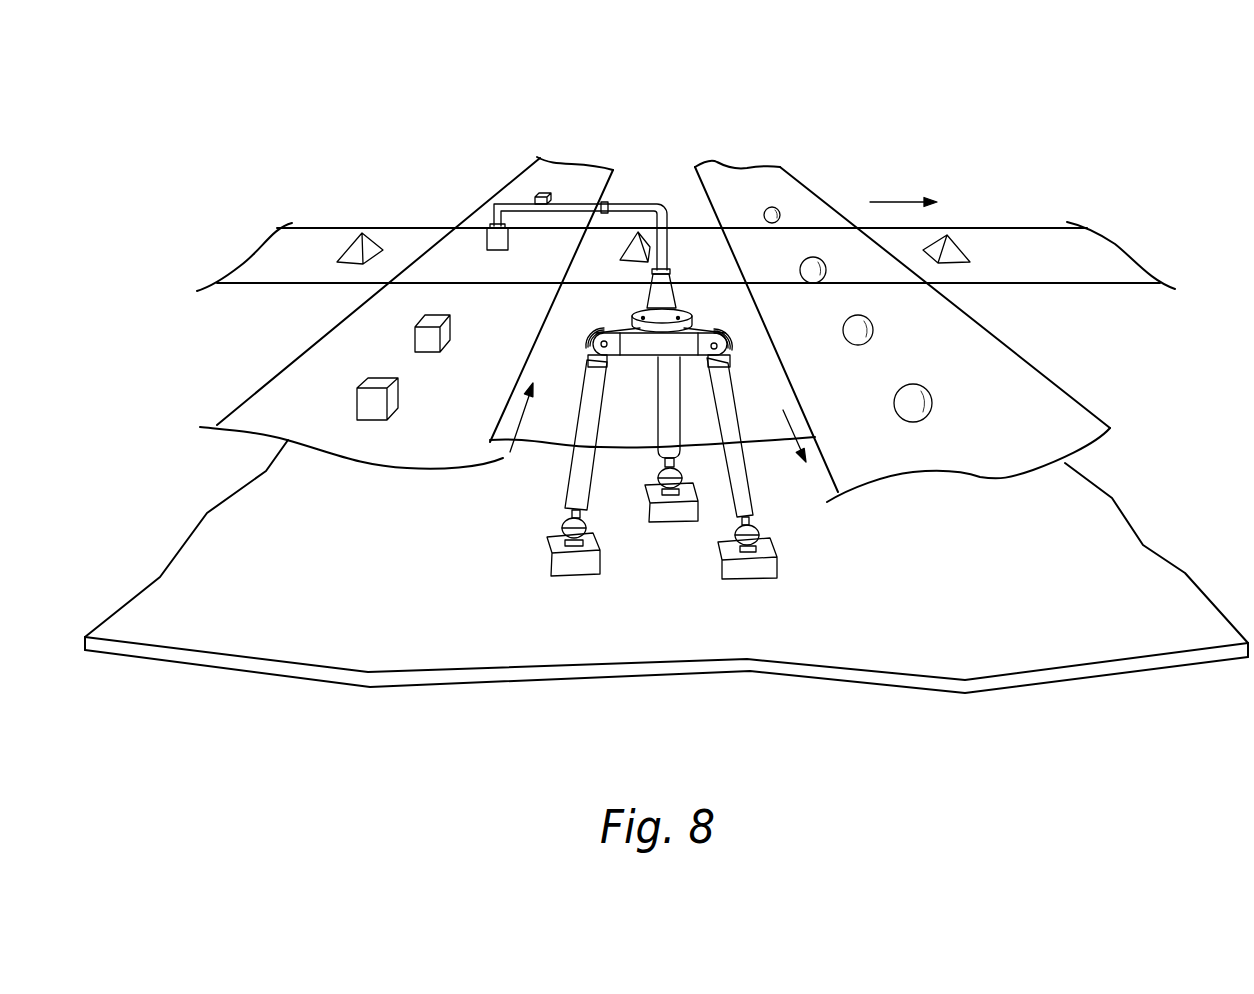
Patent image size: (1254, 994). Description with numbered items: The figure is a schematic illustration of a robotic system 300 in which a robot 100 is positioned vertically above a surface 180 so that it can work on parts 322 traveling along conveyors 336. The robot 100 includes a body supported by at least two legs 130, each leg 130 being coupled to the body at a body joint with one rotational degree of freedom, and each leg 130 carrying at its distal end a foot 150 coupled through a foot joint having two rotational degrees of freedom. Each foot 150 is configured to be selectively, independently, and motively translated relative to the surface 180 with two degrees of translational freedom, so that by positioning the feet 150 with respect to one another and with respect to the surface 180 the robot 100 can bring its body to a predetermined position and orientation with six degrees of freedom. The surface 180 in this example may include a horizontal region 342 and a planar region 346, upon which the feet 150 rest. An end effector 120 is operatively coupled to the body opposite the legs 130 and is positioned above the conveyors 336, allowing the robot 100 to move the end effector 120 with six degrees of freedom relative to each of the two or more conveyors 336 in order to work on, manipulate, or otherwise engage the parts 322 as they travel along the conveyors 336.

The robot 100 is at (619, 494).
The end effector 120 is at (632, 203).
The legs 130 is at (733, 463).
The feet 150 is at (668, 530).
The surface 180 is at (419, 689).
The robotic system 300 is at (242, 75).
The parts 322 is at (488, 253).
The conveyors 336 is at (327, 352).
The horizontal region 342 is at (594, 640).
The planar region 346 is at (718, 643).